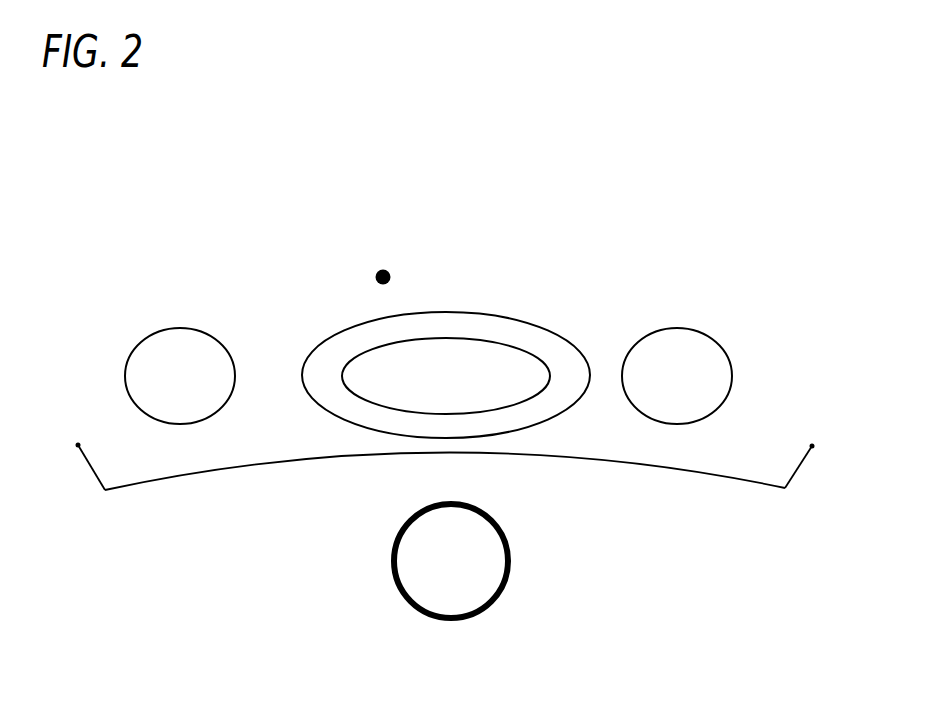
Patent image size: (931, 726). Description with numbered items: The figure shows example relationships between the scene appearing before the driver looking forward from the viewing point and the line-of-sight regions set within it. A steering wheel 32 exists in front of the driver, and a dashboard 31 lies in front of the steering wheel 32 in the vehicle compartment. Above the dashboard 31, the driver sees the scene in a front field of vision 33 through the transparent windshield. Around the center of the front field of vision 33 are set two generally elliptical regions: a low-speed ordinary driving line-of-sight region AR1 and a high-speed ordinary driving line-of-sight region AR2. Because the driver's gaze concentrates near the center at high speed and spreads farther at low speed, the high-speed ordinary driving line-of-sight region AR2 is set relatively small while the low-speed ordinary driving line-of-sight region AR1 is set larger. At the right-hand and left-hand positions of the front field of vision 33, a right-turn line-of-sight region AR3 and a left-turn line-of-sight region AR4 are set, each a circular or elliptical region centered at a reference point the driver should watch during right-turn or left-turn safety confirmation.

The dashboard 31 is at (696, 502).
The steering wheel 32 is at (473, 595).
The front field of vision 33 is at (383, 270).
The low-speed ordinary driving line-of-sight region AR1 is at (340, 420).
The high-speed ordinary driving line-of-sight region AR2 is at (468, 413).
The right-turn line-of-sight region AR3 is at (680, 328).
The left-turn line-of-sight region AR4 is at (152, 330).